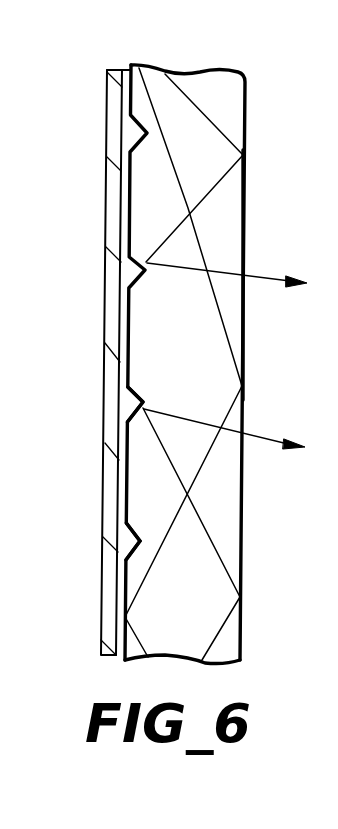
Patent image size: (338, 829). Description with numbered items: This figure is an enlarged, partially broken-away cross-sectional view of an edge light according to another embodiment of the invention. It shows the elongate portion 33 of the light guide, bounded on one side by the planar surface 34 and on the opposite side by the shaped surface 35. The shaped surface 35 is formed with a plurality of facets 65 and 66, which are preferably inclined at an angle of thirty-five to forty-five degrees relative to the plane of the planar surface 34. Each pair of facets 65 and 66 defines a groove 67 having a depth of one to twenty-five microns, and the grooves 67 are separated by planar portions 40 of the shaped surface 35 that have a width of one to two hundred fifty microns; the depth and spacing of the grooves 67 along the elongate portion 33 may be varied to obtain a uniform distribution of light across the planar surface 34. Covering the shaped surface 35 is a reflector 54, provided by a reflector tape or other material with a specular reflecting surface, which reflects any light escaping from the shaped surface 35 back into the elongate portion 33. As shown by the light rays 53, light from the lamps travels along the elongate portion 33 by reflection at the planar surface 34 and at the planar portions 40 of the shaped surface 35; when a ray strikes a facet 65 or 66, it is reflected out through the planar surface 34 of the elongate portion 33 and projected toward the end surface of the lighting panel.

The elongate portion 33 is at (230, 538).
The planar surface 34 is at (243, 345).
The shaped surface 35 is at (118, 325).
The planar portions 40 is at (123, 176).
The light rays 53 is at (234, 198).
The reflector 54 is at (112, 228).
The facet 65 is at (131, 547).
The facet 66 is at (131, 533).
The grooves 67 is at (124, 406).